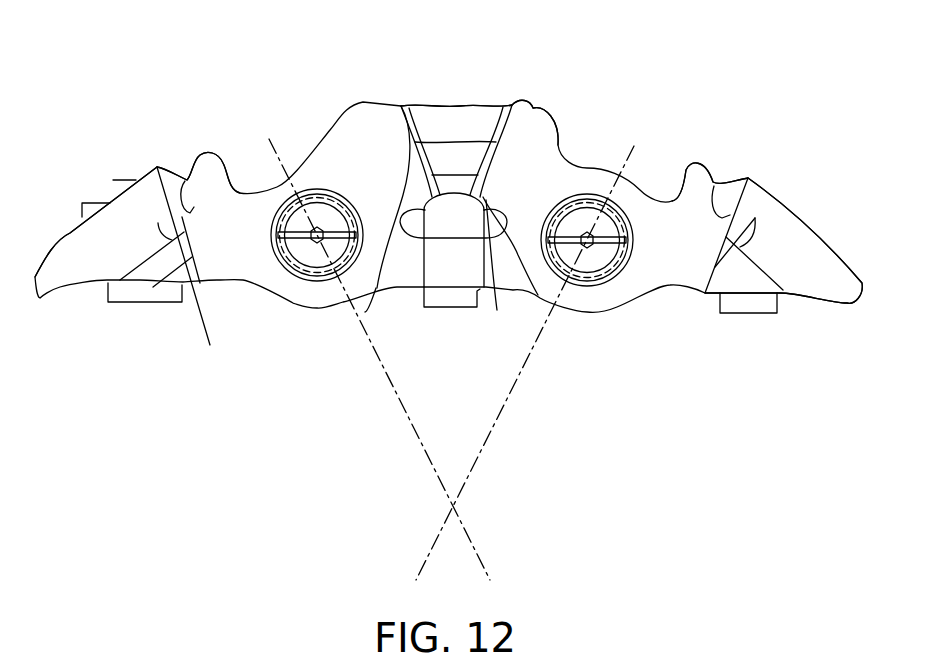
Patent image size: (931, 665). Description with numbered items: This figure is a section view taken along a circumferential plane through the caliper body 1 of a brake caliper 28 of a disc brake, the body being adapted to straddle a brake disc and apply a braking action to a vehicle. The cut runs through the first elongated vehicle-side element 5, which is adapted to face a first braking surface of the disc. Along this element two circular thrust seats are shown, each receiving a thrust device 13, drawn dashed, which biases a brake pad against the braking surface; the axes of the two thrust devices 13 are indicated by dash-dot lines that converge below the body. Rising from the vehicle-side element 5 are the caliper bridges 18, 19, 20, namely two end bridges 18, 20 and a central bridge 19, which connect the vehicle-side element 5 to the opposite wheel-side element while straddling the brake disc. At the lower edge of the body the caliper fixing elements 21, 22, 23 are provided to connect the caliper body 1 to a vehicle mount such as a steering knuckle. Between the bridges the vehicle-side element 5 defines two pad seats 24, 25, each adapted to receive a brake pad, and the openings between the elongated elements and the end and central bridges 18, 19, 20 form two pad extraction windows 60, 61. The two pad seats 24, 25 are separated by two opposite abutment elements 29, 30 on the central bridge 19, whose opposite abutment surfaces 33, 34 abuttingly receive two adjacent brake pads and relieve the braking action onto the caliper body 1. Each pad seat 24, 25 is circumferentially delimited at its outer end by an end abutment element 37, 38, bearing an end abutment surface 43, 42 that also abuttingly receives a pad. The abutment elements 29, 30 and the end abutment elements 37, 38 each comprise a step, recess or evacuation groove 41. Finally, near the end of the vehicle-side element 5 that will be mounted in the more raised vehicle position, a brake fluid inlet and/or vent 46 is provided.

The caliper body 1 is at (483, 116).
The first elongated vehicle-side element 5 is at (183, 168).
The thrust device 13 is at (336, 206).
The caliper bridge 18 is at (131, 213).
The caliper bridge 19 is at (443, 117).
The caliper bridge 20 is at (786, 213).
The caliper fixing element 21 is at (110, 295).
The caliper fixing element 22 is at (457, 298).
The caliper fixing element 23 is at (770, 300).
The pad seat 24 is at (374, 181).
The pad seat 25 is at (550, 179).
The brake caliper 28 is at (684, 118).
The abutment element 29 is at (397, 107).
The abutment element 30 is at (478, 128).
The abutment surface 33 is at (381, 287).
The abutment surface 34 is at (520, 102).
The end abutment element 37 is at (193, 272).
The end abutment element 38 is at (705, 293).
The evacuation groove 41 is at (449, 163).
The end abutment surface 42 is at (724, 181).
The end abutment surface 43 is at (179, 216).
The brake fluid inlet and/or vent 46 is at (80, 218).
The pad extraction window 60 is at (233, 138).
The pad extraction window 61 is at (684, 156).